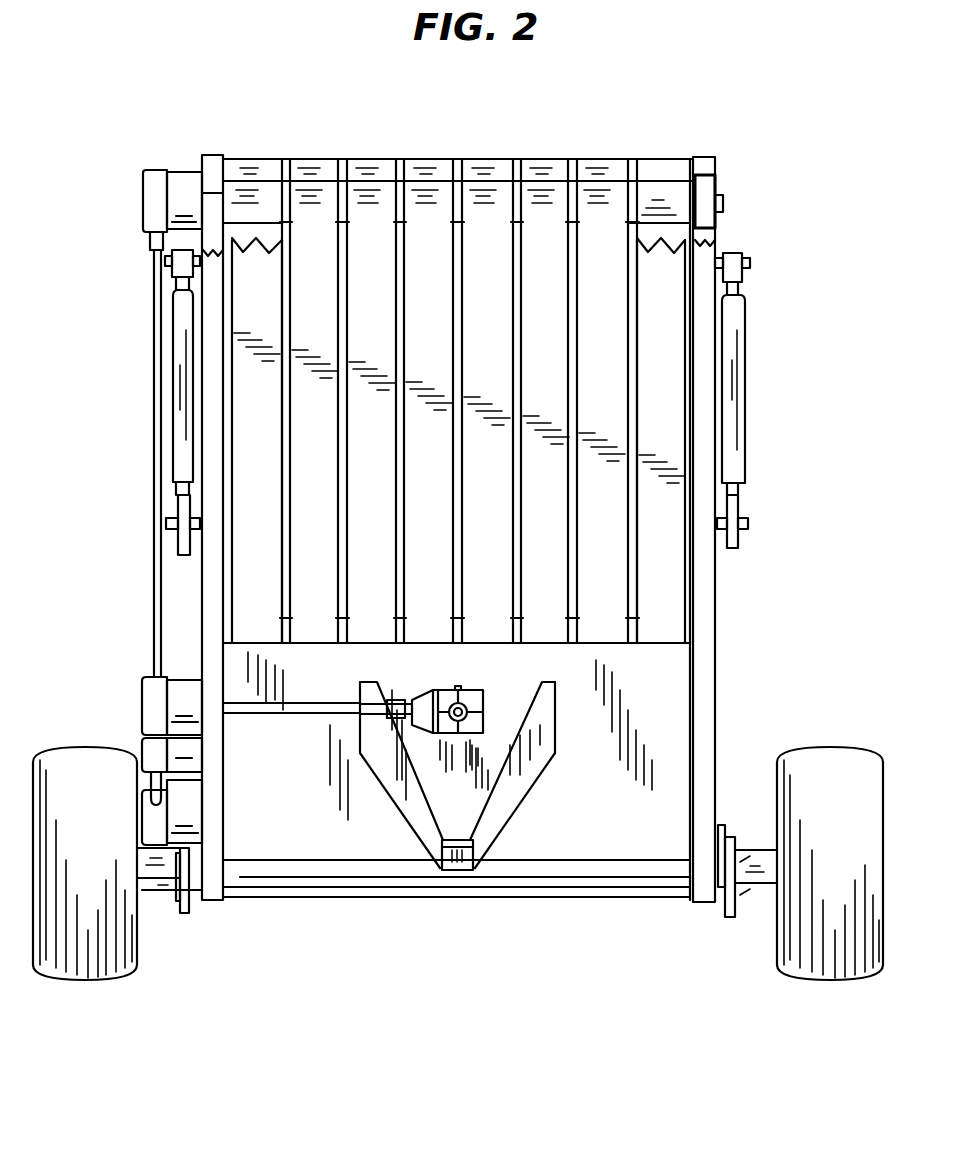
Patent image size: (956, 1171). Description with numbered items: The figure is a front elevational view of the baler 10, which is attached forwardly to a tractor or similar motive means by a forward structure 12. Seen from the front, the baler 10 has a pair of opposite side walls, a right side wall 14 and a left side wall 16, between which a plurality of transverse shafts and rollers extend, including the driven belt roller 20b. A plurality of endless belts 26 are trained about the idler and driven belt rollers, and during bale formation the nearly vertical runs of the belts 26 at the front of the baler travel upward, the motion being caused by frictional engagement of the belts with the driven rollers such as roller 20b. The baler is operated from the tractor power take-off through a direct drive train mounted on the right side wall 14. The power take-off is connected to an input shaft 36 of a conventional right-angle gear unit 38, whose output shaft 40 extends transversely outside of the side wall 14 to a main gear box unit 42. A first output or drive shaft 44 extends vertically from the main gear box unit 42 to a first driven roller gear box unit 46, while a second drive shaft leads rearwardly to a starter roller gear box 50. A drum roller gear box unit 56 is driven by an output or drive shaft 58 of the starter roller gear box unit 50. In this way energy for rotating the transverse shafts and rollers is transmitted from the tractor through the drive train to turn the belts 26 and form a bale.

The baler 10 is at (607, 148).
The hopper 12 is at (513, 800).
The right side wall 14 is at (207, 453).
The left side wall 16 is at (707, 430).
The driven belt roller 20b is at (642, 197).
The endless belts 26 is at (420, 162).
The input shaft 36 is at (452, 721).
The right-angle gear unit 38 is at (473, 693).
The output shaft 40 is at (258, 717).
The main gear box unit 42 is at (155, 702).
The first output or drive shaft 44 is at (155, 387).
The first driven roller gear box unit 46 is at (193, 183).
The starter roller gear box 50 is at (152, 760).
The drum roller gear box unit 56 is at (160, 823).
The output or drive shaft 58 is at (163, 780).